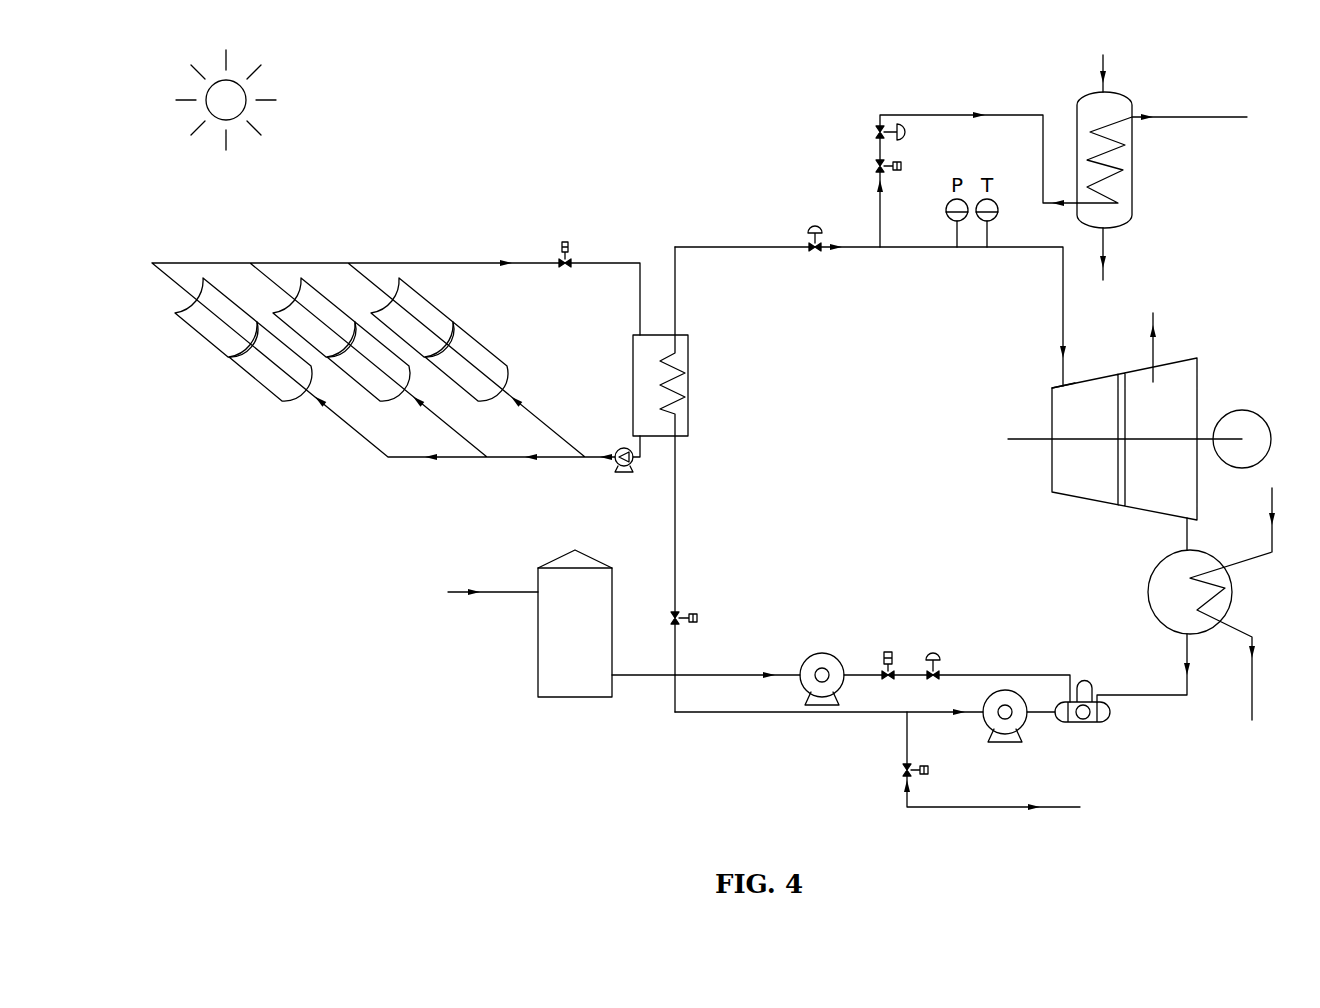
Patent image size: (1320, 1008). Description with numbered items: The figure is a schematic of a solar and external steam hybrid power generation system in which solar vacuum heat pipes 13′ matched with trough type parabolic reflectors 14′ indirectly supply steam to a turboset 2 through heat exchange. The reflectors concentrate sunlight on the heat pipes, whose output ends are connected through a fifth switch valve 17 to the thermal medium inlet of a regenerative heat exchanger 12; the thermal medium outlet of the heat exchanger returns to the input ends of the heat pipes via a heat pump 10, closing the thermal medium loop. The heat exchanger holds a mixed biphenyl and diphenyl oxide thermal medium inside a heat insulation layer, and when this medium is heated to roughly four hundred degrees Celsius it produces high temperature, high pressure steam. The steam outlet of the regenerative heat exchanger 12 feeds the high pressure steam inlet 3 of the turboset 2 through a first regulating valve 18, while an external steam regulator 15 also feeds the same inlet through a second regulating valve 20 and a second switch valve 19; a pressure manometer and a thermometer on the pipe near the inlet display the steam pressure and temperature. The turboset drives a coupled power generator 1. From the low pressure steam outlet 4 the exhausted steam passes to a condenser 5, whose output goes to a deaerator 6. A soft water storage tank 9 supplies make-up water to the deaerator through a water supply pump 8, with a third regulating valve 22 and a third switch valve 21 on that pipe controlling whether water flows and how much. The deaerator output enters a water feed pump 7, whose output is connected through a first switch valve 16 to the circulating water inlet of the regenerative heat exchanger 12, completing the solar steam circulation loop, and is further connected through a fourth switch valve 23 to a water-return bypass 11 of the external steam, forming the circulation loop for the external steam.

The power generator 1 is at (1270, 453).
The turboset 2 is at (1110, 377).
The high pressure steam inlet 3 is at (1060, 383).
The low pressure steam outlet 4 is at (1190, 517).
The condenser 5 is at (1158, 598).
The deaerator 6 is at (1098, 718).
The water feed pump 7 is at (1014, 720).
The water supply pump 8 is at (816, 661).
The soft water storage tank 9 is at (550, 628).
The heat pump 10 is at (634, 465).
The water-return bypass 11 is at (1018, 806).
The regenerative heat exchanger 12 is at (633, 346).
The solar vacuum heat pipes 13′ is at (381, 290).
The trough type parabolic reflectors 14′ is at (430, 298).
The external steam regulator 15 is at (1130, 183).
The first switch valve 16 is at (700, 616).
The fifth switch valve 17 is at (562, 245).
The first regulating valve 18 is at (812, 226).
The second switch valve 19 is at (903, 167).
The second regulating valve 20 is at (903, 139).
The third switch valve 21 is at (887, 650).
The third regulating valve 22 is at (930, 652).
The fourth switch valve 23 is at (932, 773).